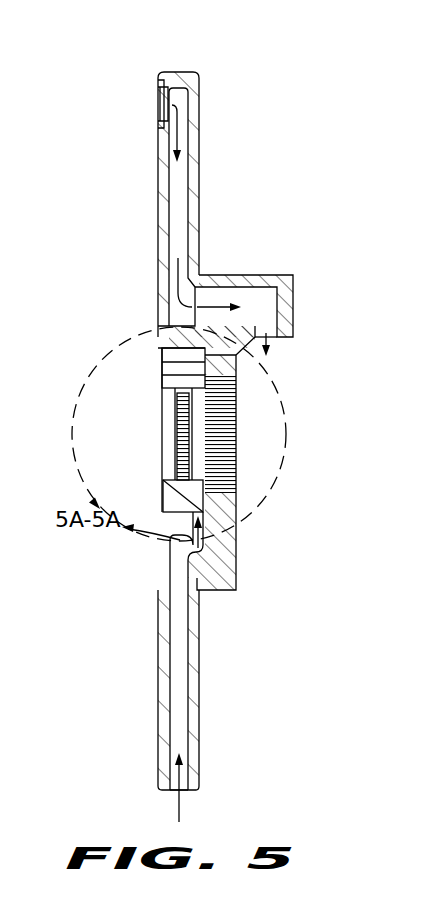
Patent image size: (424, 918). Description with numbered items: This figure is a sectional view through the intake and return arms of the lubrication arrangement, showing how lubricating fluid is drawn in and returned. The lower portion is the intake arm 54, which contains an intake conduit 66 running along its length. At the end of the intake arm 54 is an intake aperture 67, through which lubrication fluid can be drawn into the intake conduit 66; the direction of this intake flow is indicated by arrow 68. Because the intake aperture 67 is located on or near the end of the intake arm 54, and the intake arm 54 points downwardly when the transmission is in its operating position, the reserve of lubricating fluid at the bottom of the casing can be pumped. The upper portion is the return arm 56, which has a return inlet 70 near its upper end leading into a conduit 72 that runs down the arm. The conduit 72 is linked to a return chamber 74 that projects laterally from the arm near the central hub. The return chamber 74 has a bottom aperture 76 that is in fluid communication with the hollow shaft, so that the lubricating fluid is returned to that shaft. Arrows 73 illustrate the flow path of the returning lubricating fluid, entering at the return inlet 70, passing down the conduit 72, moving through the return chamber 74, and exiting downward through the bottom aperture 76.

The intake arm 54 is at (167, 670).
The return arm 56 is at (167, 198).
The intake conduit 66 is at (180, 720).
The intake aperture 67 is at (185, 787).
The arrow 68 is at (183, 575).
The return inlet 70 is at (167, 97).
The conduit 72 is at (177, 185).
The arrows 73 is at (172, 105).
The return chamber 74 is at (235, 297).
The bottom aperture 76 is at (272, 338).